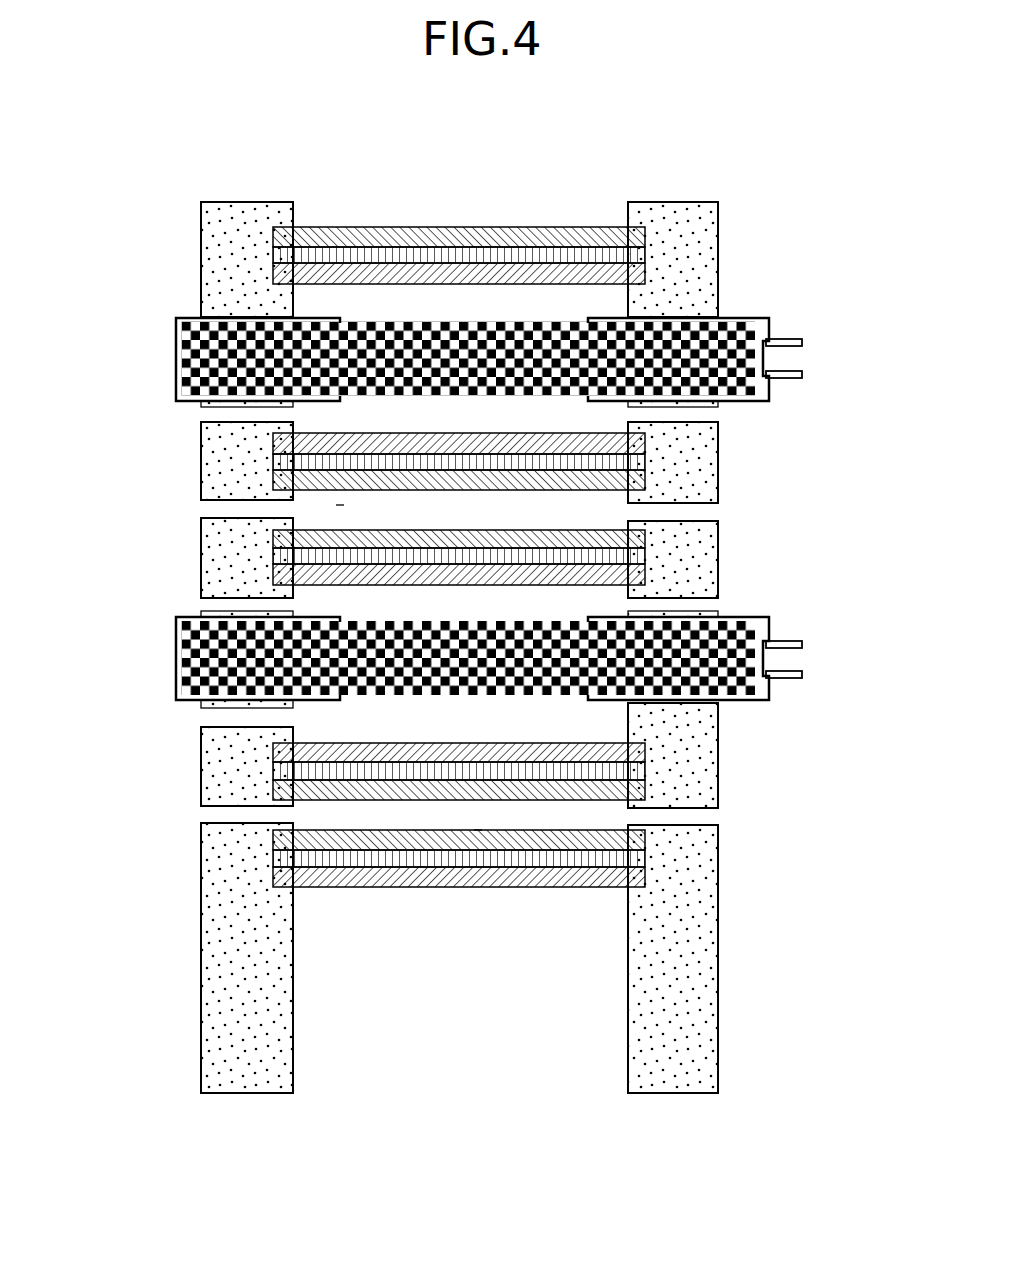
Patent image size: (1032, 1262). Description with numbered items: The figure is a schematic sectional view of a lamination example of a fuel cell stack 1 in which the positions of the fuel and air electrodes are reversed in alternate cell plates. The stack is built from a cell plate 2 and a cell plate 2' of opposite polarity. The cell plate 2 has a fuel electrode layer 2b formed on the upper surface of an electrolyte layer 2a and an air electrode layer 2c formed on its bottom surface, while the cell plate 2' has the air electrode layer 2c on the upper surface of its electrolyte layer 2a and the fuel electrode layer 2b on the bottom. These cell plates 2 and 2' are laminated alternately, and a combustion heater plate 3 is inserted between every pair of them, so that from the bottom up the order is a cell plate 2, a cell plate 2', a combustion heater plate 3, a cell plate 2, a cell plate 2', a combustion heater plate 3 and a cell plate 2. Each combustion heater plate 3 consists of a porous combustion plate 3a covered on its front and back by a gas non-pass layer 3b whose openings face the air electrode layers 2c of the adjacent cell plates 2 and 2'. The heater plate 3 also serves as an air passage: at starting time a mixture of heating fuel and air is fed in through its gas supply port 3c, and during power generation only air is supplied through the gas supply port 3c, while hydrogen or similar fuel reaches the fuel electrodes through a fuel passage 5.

The fuel cell stack 1 is at (622, 170).
The cell plate 2 is at (457, 644).
The cell plate 2' is at (456, 621).
The electrolyte layer 2a is at (647, 255).
The fuel electrode layer 2b is at (647, 237).
The air electrode layer 2c is at (647, 273).
The combustion heater plate 3 is at (476, 487).
The porous combustion plate 3a is at (440, 344).
The gas non-pass layer 3b is at (186, 318).
The gas supply port 3c is at (778, 361).
The fuel passage 5 is at (340, 505).